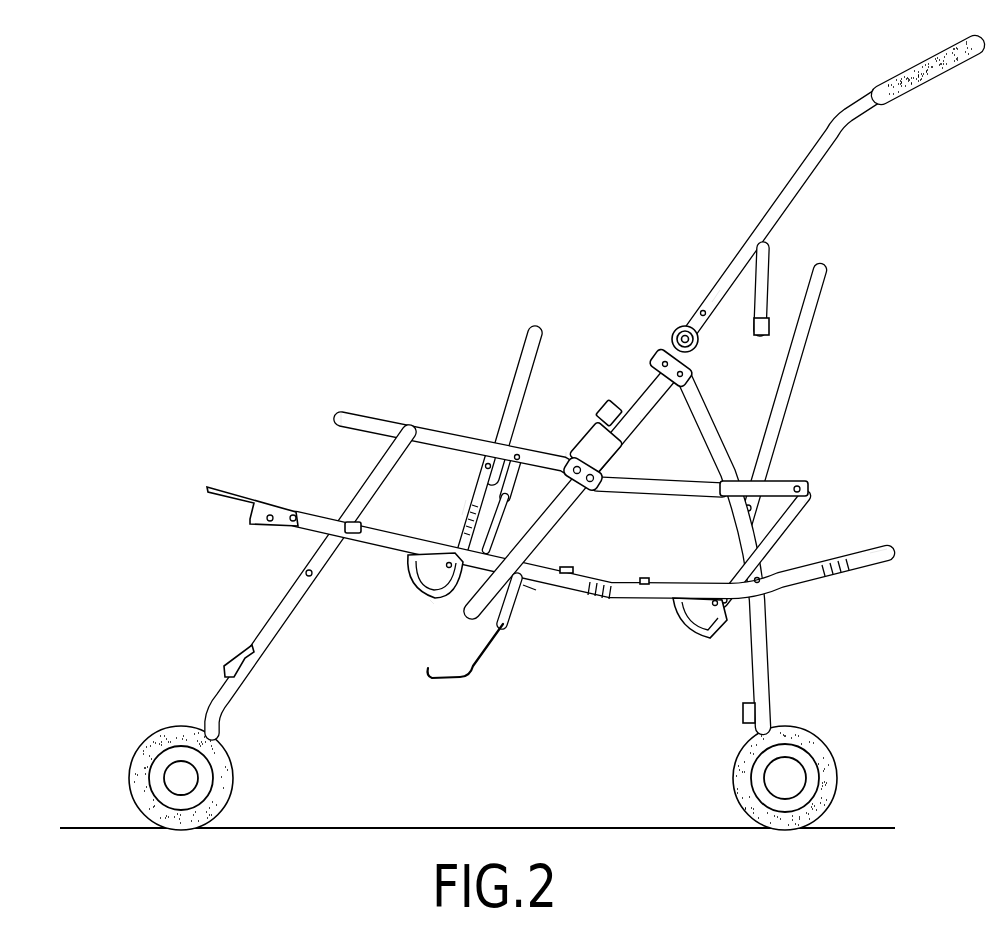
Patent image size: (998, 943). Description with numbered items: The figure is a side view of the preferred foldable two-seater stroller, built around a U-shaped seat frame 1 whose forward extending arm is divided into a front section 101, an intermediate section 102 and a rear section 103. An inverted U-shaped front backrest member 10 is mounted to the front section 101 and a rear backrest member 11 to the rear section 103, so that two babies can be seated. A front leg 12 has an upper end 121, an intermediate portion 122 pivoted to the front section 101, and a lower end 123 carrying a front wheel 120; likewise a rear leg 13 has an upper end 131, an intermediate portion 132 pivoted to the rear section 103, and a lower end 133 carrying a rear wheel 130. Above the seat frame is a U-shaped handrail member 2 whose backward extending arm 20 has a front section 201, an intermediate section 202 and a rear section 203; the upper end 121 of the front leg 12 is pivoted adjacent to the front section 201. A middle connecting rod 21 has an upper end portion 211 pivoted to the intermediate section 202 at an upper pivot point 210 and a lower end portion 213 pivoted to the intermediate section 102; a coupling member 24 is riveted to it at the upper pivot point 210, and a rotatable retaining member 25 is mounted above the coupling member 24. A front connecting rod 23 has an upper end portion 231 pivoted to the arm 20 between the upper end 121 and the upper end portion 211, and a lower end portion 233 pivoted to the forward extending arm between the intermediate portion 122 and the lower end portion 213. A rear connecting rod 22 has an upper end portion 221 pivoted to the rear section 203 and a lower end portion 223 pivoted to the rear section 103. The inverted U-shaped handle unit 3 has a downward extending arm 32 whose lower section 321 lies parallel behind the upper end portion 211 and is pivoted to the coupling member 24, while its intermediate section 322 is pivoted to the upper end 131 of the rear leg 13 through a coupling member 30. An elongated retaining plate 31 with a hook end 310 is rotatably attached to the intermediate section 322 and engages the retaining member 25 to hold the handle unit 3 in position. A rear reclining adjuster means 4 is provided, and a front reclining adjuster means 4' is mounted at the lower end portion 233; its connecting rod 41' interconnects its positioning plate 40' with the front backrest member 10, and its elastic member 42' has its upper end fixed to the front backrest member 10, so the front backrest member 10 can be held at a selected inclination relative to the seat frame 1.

The seat frame 1 is at (903, 550).
The front section 101 is at (291, 525).
The intermediate section 102 is at (604, 599).
The rear section 103 is at (781, 592).
The front backrest member 10 is at (541, 372).
The rear backrest member 11 is at (788, 383).
The front leg 12 is at (372, 493).
The front wheel 120 is at (231, 781).
The upper end 121 is at (410, 427).
The intermediate portion 122 is at (350, 540).
The lower end 123 is at (223, 733).
The rear leg 13 is at (769, 630).
The rear wheel 130 is at (836, 788).
The upper end 131 is at (694, 380).
The intermediate portion 132 is at (760, 570).
The lower end 133 is at (766, 720).
The handrail member 2 is at (814, 481).
The backward extending arm 20 is at (447, 430).
The front section 201 is at (370, 413).
The intermediate section 202 is at (566, 455).
The rear section 203 is at (788, 480).
The middle connecting rod 21 is at (546, 521).
The upper pivot point 210 is at (598, 492).
The upper end portion 211 is at (607, 403).
The lower end portion 213 is at (533, 598).
The rear connecting rod 22 is at (788, 507).
The upper end portion 221 is at (804, 502).
The lower end portion 223 is at (723, 603).
The front connecting rod 23 is at (463, 591).
The upper end portion 231 is at (521, 463).
The lower end portion 233 is at (470, 612).
The coupling member 24 is at (596, 486).
The rotatable retaining member 25 is at (631, 457).
The handle unit 3 is at (903, 107).
The coupling member 30 is at (675, 334).
The elongated retaining plate 31 is at (766, 261).
The hook end 310 is at (768, 323).
The downward extending arm 32 is at (797, 195).
The lower section 321 is at (645, 416).
The intermediate section 322 is at (719, 281).
The rear reclining adjuster means 4 is at (689, 633).
The front reclining adjuster means 4' is at (409, 635).
The positioning plate 40' is at (419, 587).
The connecting rod 41' is at (452, 505).
The elastic member 42' is at (426, 510).